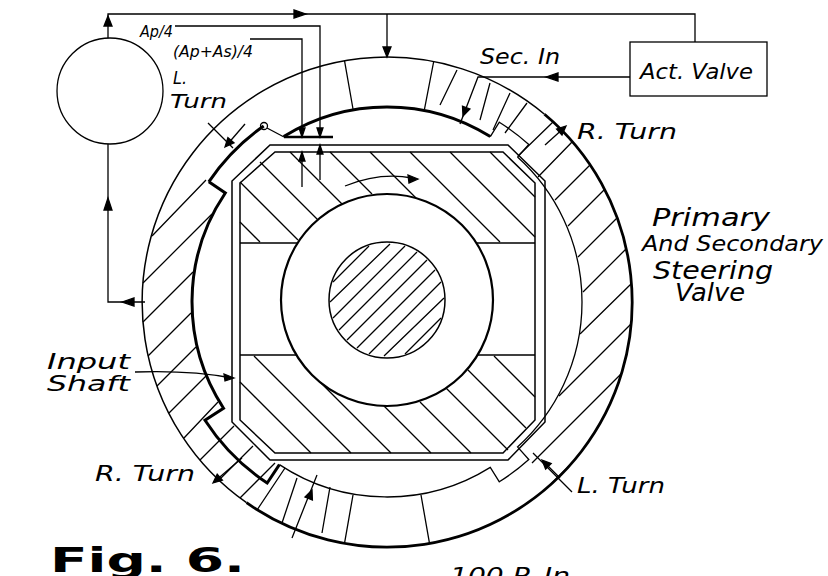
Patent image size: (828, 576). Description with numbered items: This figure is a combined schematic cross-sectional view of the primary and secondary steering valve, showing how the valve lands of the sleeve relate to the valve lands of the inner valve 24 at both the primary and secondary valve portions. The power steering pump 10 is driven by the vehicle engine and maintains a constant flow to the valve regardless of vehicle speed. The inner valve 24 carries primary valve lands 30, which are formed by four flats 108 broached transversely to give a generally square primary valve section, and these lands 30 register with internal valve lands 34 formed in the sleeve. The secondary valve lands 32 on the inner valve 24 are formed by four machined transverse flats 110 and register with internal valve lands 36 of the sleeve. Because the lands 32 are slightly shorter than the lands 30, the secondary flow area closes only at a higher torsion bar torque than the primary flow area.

The power steering pump 10 is at (76, 58).
The inner valve 24 is at (512, 405).
The valve lands 30 is at (500, 140).
The valve lands 32 is at (542, 163).
The internal valve lands 34 is at (266, 122).
The internal valve lands 36 is at (515, 126).
The flats 108 is at (233, 233).
The transverse flats 110 is at (233, 212).